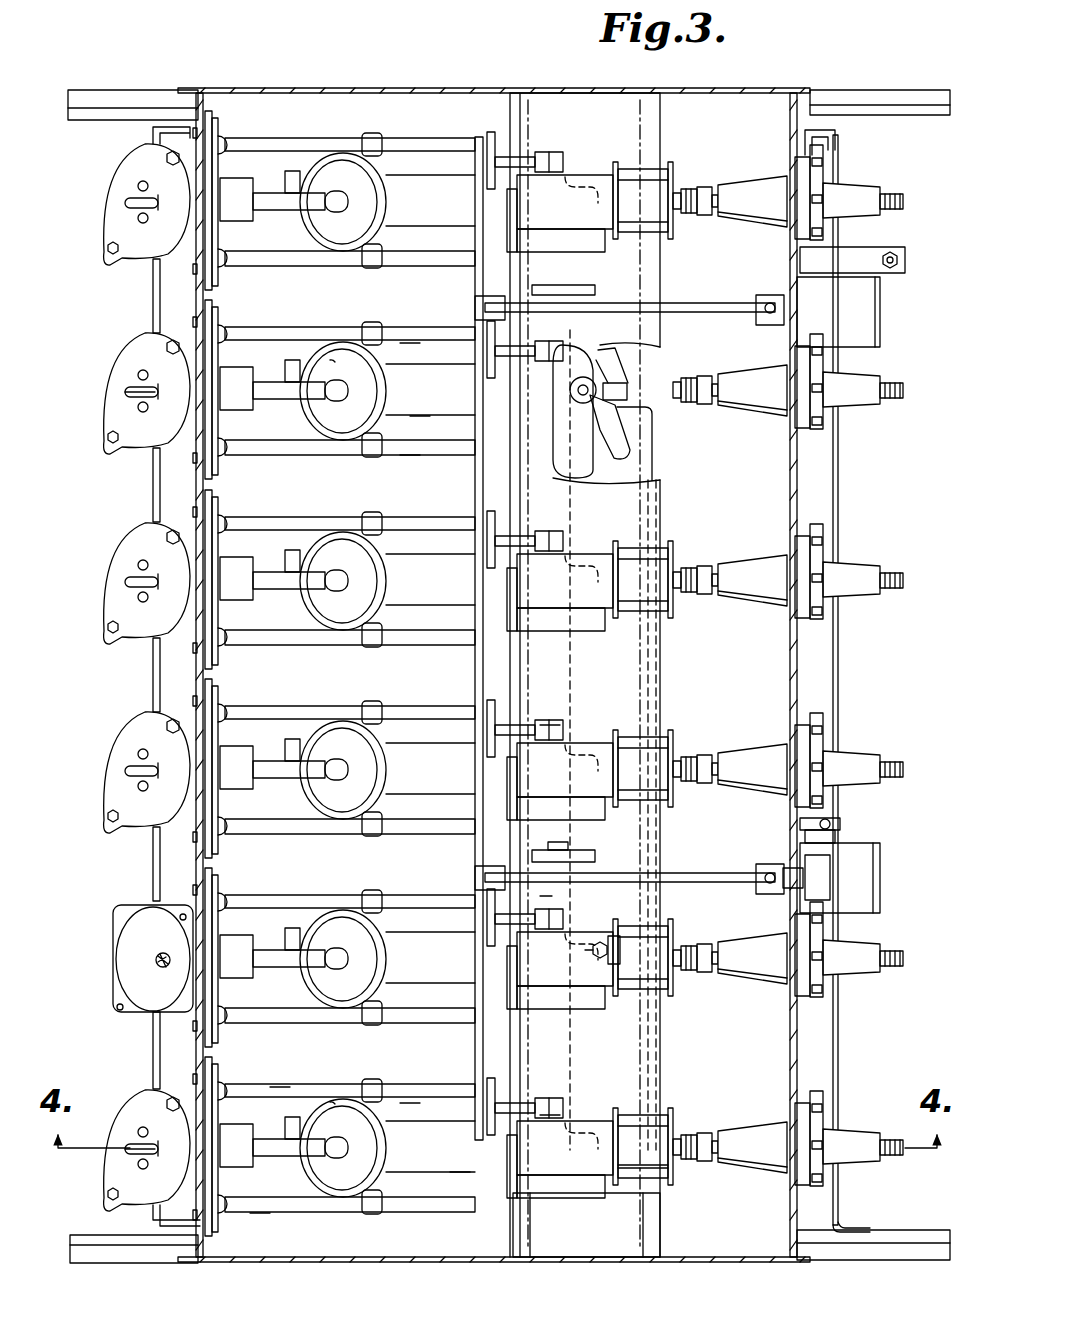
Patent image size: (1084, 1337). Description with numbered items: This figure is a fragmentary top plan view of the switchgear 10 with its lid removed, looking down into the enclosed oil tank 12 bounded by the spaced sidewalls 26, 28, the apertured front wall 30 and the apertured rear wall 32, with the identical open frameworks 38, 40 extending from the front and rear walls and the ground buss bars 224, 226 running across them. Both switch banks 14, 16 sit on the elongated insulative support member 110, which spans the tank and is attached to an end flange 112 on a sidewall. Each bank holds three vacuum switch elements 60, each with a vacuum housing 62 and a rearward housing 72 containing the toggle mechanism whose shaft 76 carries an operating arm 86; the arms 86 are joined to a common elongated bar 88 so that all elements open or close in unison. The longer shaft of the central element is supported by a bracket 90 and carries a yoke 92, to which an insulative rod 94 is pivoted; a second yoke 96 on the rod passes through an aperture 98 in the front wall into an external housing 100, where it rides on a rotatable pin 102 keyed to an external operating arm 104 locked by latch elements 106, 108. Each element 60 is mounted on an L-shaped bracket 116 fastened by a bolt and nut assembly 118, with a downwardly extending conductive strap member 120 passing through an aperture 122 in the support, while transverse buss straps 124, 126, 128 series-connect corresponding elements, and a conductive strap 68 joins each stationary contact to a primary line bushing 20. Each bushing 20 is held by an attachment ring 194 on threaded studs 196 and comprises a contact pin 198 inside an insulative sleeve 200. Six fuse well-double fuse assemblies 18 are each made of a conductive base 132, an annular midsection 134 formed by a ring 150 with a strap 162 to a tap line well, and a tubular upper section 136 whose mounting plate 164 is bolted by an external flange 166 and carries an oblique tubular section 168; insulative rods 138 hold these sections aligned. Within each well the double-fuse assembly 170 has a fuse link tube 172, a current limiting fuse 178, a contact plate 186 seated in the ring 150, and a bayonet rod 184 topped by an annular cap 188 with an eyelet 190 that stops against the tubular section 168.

The switchgear 10 is at (487, 651).
The oil tank 12 is at (487, 663).
The switch bank 14 is at (681, 704).
The switch bank 16 is at (690, 158).
The fuse well-double fuse assembly 18 is at (332, 130).
The primary line bushing 20 is at (884, 408).
The sidewall 26 is at (335, 1263).
The sidewall 28 is at (318, 88).
The front wall 30 is at (805, 470).
The rear wall 32 is at (175, 671).
The framework 38 is at (868, 95).
The framework 40 is at (105, 92).
The vacuum switch element 60 is at (692, 228).
The vacuum housing 62 is at (632, 1176).
The conductive strap 68 is at (690, 980).
The housing 72 is at (527, 772).
The shaft 76 is at (562, 722).
The operating arm 86 is at (521, 727).
The elongated bar 88 is at (478, 1058).
The bracket 90 is at (575, 855).
The yoke 92 is at (487, 873).
The insulative rod 94 is at (688, 873).
The yoke 96 is at (781, 858).
The aperture 98 is at (785, 893).
The external housing 100 is at (868, 312).
The rotatable pin 102 is at (870, 868).
The operating arm 104 is at (845, 840).
The latch element 106 is at (848, 820).
The latch element 108 is at (906, 256).
The insulative support member 110 is at (630, 637).
The end flange 112 is at (573, 1258).
The L-shaped metallic bracket 116 is at (545, 815).
The bolt and nut assembly 118 is at (599, 942).
The conductive strap member 120 is at (612, 375).
The aperture 122 is at (617, 940).
The buss strap 124 is at (657, 1048).
The buss strap 126 is at (574, 512).
The buss strap 128 is at (655, 470).
The conductive base 132 is at (622, 440).
The annular conductive midsection 134 is at (375, 460).
The tubular upper section 136 is at (152, 470).
The insulative synthetic resin rod 138 is at (410, 454).
The annular metallic ring 150 is at (388, 385).
The conductive strap 162 is at (275, 408).
The mounting plate 164 is at (215, 478).
The external flange 166 is at (160, 1065).
The tubular section 168 is at (125, 935).
The double-fuse assembly 170 is at (421, 345).
The fuse link tube 172 is at (573, 360).
The current limiting fuse 178 is at (421, 417).
The insulative rod 184 is at (155, 961).
The contact plate 186 is at (333, 362).
The annular cap 188 is at (123, 346).
The eyelet 190 is at (125, 392).
The attachment ring 194 is at (826, 568).
The threaded stud 196 is at (815, 537).
The contact pin 198 is at (893, 1160).
The sleeve 200 is at (883, 592).
The ground buss bar 224 is at (840, 650).
The ground buss bar 226 is at (153, 846).